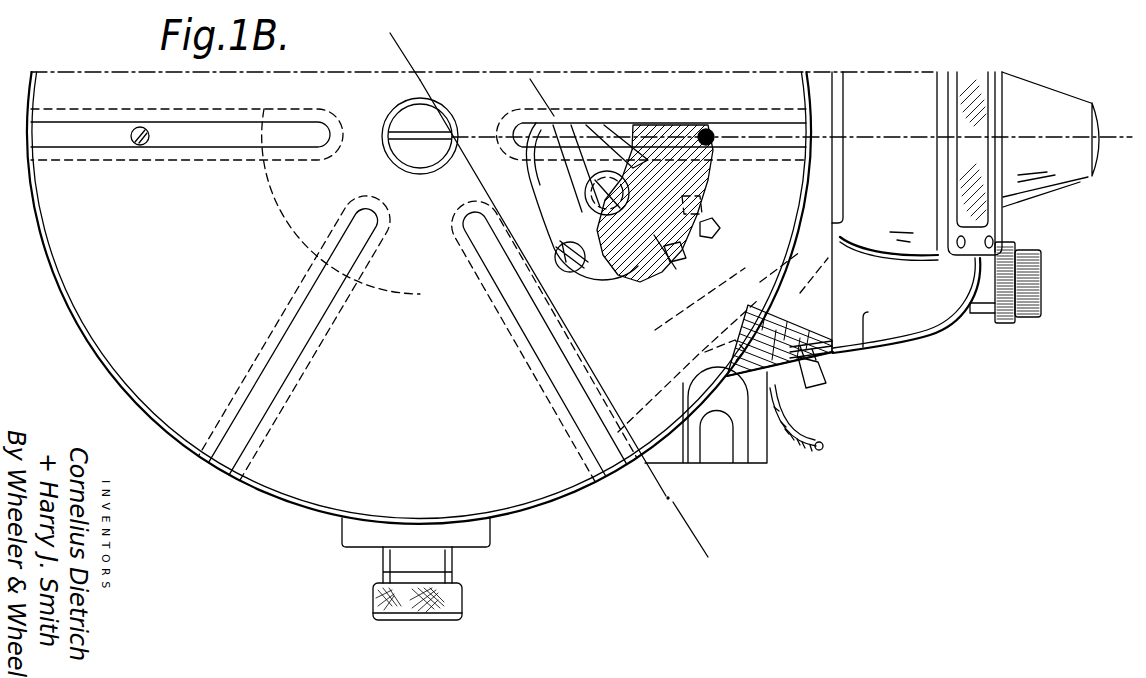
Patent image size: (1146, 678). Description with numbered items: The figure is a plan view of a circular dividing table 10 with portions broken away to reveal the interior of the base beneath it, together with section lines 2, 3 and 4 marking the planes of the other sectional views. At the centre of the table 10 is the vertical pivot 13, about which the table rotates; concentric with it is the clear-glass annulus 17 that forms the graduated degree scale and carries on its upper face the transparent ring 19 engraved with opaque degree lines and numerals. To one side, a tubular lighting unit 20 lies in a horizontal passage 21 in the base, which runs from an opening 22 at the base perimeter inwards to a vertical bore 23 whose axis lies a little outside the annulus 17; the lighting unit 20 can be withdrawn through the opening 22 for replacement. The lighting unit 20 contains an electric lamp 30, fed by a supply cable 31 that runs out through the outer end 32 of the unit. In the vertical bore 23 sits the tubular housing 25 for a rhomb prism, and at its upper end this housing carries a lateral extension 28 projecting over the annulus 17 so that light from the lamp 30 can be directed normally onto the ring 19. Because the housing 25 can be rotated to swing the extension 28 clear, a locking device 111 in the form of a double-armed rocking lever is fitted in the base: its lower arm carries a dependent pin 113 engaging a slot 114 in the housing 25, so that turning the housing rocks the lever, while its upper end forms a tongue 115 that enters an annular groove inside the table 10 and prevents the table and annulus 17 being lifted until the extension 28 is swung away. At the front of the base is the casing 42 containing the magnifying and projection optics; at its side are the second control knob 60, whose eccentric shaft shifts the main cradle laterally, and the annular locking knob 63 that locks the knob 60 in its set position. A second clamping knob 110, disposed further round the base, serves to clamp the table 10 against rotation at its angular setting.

The section line 2- 2 is at (423, 28).
The section line 3- 3 is at (536, 90).
The section line 4- 4 is at (413, 138).
The circular dividing table 10 is at (97, 363).
The vertical pivot 13 is at (383, 142).
The clear-glass annulus 17 is at (412, 297).
The transparent ring 19 is at (540, 184).
The tubular lighting unit 20 is at (720, 229).
The horizontal passage 21 is at (712, 296).
The opening 22 is at (723, 357).
The vertical bore 23 is at (704, 176).
The tubular housing 25 is at (585, 190).
The lateral extension 28 is at (530, 158).
The electric lamp 30 is at (612, 292).
The supply cable 31 is at (790, 423).
The outer end 32 is at (733, 361).
The casing 42 is at (918, 318).
The second control knob 60 is at (1032, 313).
The annular locking knob 63 is at (1004, 326).
The second knob 110 is at (458, 597).
The locking device 111 is at (512, 328).
The dependent pin 113 is at (686, 253).
The slot 114 is at (702, 205).
The tongue 115 is at (528, 343).